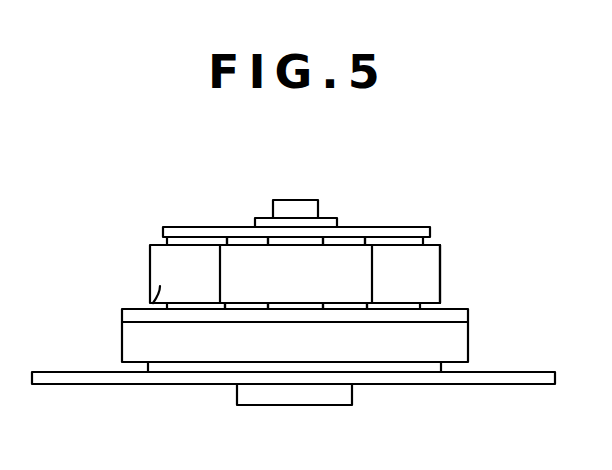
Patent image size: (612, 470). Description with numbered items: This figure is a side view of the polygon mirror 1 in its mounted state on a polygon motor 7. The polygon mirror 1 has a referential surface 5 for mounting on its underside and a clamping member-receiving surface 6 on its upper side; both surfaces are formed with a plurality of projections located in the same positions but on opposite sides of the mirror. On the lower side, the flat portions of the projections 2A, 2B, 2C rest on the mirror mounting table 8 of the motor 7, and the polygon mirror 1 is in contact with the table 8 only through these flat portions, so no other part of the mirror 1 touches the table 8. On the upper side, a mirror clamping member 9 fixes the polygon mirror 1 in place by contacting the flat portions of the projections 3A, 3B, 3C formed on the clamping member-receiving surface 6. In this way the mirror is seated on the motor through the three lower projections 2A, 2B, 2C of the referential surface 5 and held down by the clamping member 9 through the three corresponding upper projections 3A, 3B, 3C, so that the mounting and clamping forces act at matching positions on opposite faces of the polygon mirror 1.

The polygon mirror 1 is at (157, 272).
The projection 2A is at (190, 310).
The projection 2B is at (290, 310).
The projection 2C is at (400, 310).
The projection 3A is at (183, 241).
The projection 3B is at (313, 242).
The projection 3C is at (393, 240).
The referential surface 5 is at (160, 302).
The clamping member-receiving surface 6 is at (432, 243).
The polygon motor 7 is at (378, 352).
The mirror mounting table 8 is at (455, 309).
The mirror clamping member 9 is at (229, 218).